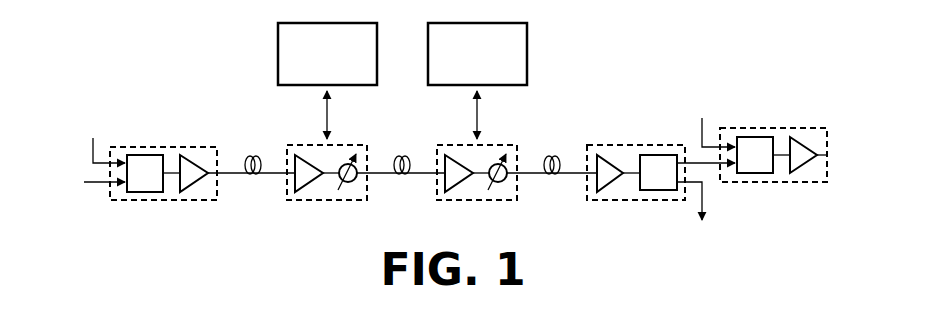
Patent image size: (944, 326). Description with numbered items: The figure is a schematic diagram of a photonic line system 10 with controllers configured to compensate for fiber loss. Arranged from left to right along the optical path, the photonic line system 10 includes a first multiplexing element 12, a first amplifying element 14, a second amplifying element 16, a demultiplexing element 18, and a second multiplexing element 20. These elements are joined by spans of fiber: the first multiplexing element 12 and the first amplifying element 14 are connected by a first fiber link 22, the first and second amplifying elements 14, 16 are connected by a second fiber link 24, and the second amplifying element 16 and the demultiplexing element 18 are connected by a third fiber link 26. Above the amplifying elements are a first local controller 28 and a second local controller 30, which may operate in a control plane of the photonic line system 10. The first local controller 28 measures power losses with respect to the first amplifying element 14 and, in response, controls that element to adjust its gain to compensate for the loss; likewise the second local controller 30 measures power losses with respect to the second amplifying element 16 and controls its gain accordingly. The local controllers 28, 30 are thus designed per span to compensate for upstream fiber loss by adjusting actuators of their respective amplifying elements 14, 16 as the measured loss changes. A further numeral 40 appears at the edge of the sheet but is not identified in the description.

The photonic line system 10 is at (116, 242).
The first multiplexing element 12 is at (173, 147).
The first amplifying element 14 is at (315, 200).
The second amplifying element 16 is at (502, 147).
The demultiplexing element 18 is at (655, 145).
The second multiplexing element 20 is at (782, 182).
The first fiber link 22 is at (237, 178).
The second fiber link 24 is at (383, 165).
The third fiber link 26 is at (540, 177).
The first local controller 28 is at (278, 65).
The second local controller 30 is at (527, 62).
The network element 40 is at (816, 321).